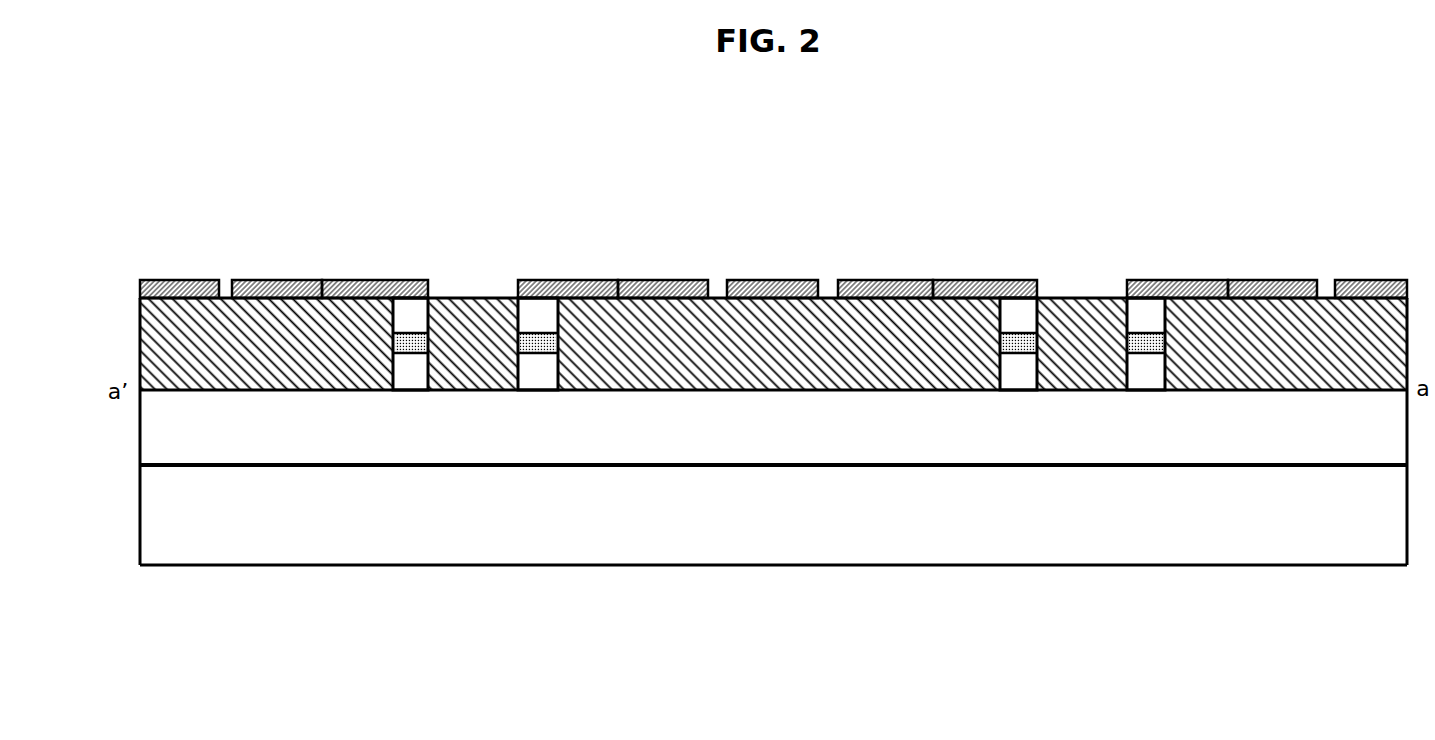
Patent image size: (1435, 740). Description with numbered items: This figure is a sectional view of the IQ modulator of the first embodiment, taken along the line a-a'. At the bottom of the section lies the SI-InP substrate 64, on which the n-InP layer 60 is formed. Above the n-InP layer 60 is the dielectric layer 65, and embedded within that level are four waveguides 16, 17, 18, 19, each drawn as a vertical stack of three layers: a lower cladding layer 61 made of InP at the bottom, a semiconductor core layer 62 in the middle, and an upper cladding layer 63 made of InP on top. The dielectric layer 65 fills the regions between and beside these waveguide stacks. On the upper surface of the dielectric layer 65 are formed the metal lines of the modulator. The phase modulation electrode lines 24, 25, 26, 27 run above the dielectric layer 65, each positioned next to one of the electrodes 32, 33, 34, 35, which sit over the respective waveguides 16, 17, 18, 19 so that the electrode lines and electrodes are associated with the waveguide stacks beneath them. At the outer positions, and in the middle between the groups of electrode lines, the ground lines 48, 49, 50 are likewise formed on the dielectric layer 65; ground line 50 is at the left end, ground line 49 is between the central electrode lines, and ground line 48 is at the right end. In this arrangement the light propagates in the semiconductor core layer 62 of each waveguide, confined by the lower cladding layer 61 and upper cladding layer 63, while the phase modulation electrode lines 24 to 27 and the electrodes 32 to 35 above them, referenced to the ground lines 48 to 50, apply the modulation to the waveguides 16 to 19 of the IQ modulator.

The waveguide 16 is at (1127, 252).
The waveguide 17 is at (1000, 252).
The waveguide 18 is at (518, 252).
The waveguide 19 is at (390, 252).
The phase modulation electrode line 24 is at (1283, 277).
The phase modulation electrode line 25 is at (855, 277).
The phase modulation electrode line 26 is at (680, 277).
The phase modulation electrode line 27 is at (243, 278).
The electrode 32 is at (1200, 277).
The electrode 33 is at (970, 275).
The electrode 34 is at (580, 277).
The electrode 35 is at (360, 277).
The ground line 48 is at (1367, 277).
The ground line 49 is at (758, 277).
The ground line 50 is at (158, 278).
The n-InP layer 60 is at (783, 433).
The lower cladding layer 61 is at (538, 372).
The semiconductor core layer 62 is at (420, 346).
The upper cladding layer 63 is at (532, 318).
The SI-InP substrate 64 is at (463, 538).
The dielectric layer 65 is at (230, 357).